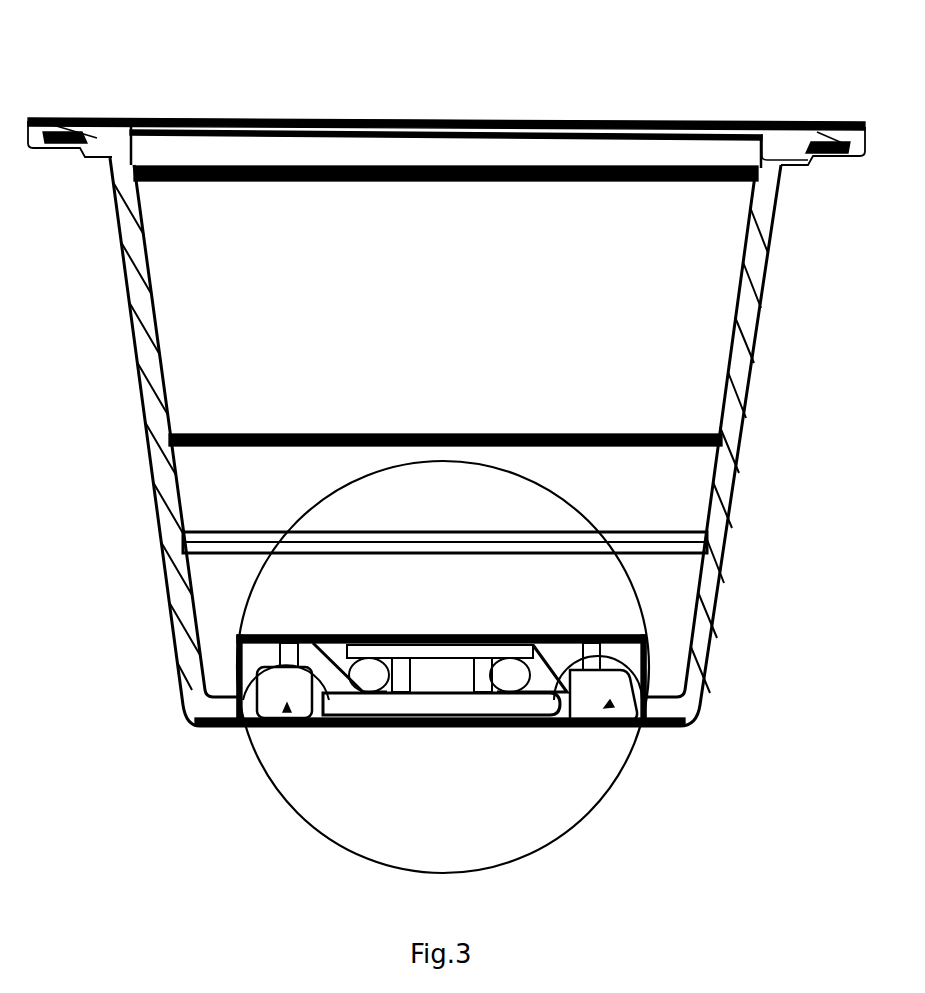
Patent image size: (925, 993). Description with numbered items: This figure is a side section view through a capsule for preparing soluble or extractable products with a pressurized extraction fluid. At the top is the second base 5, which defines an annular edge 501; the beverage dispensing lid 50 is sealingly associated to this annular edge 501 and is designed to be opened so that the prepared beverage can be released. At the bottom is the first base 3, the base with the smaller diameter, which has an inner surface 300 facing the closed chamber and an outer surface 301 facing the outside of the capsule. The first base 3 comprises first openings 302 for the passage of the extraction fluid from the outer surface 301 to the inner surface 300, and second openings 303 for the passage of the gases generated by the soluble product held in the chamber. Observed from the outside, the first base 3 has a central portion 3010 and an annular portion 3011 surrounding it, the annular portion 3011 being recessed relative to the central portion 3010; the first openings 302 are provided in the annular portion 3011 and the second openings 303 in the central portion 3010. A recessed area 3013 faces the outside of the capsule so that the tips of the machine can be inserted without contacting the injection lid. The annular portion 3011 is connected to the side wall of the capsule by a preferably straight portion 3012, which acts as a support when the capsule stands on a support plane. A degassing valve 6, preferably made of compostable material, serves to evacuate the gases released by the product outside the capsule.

The second base 5 is at (80, 118).
The beverage dispensing lid 50 is at (255, 118).
The annular edge 501 is at (865, 118).
The inner surface 300 is at (220, 695).
The second openings 303 is at (397, 635).
The first openings 302 is at (288, 635).
The outer surface 301 is at (207, 718).
The portion 3012 is at (200, 710).
The annular portion 3011 is at (244, 725).
The recessed area 3013 is at (283, 712).
The degassing valve 6 is at (310, 725).
The central portion 3010 is at (540, 727).
The first base 3 is at (580, 672).